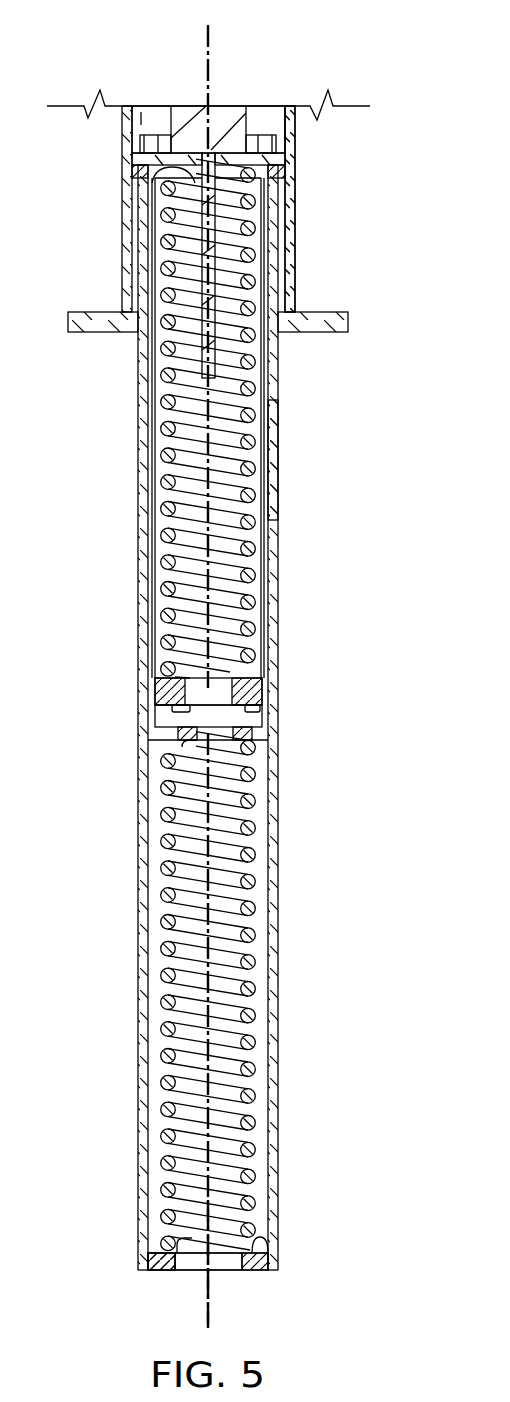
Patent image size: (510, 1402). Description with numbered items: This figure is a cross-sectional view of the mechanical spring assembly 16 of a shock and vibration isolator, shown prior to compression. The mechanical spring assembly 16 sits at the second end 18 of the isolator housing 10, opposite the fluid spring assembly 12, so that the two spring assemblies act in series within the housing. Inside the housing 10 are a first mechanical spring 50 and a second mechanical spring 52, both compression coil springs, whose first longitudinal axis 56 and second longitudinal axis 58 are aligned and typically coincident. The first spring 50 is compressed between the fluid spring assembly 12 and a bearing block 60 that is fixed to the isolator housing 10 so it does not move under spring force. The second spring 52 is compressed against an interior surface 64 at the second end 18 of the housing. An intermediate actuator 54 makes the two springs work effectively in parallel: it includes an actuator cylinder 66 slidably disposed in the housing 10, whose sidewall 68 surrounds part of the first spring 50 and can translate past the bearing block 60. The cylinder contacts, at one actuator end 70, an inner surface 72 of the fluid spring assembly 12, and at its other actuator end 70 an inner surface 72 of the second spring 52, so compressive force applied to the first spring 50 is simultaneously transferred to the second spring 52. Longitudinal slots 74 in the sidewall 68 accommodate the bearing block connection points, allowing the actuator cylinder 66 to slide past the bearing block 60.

The isolator housing 10 is at (142, 1115).
The fluid spring assembly 12 is at (86, 136).
The mechanical spring assembly 16 is at (116, 662).
The second end 18 is at (117, 1255).
The first mechanical spring 50 is at (256, 612).
The second mechanical spring 52 is at (255, 981).
The intermediate actuator 54 is at (153, 541).
The first longitudinal axis 56 is at (211, 40).
The second longitudinal axis 58 is at (211, 1313).
The bearing block 60 is at (258, 688).
The interior surface 64 is at (268, 1240).
The actuator cylinder 66 is at (266, 549).
The sidewall 68 is at (266, 476).
The actuator end 70 is at (289, 176).
The inner surface 72 is at (183, 157).
The longitudinal slot 74 is at (183, 707).